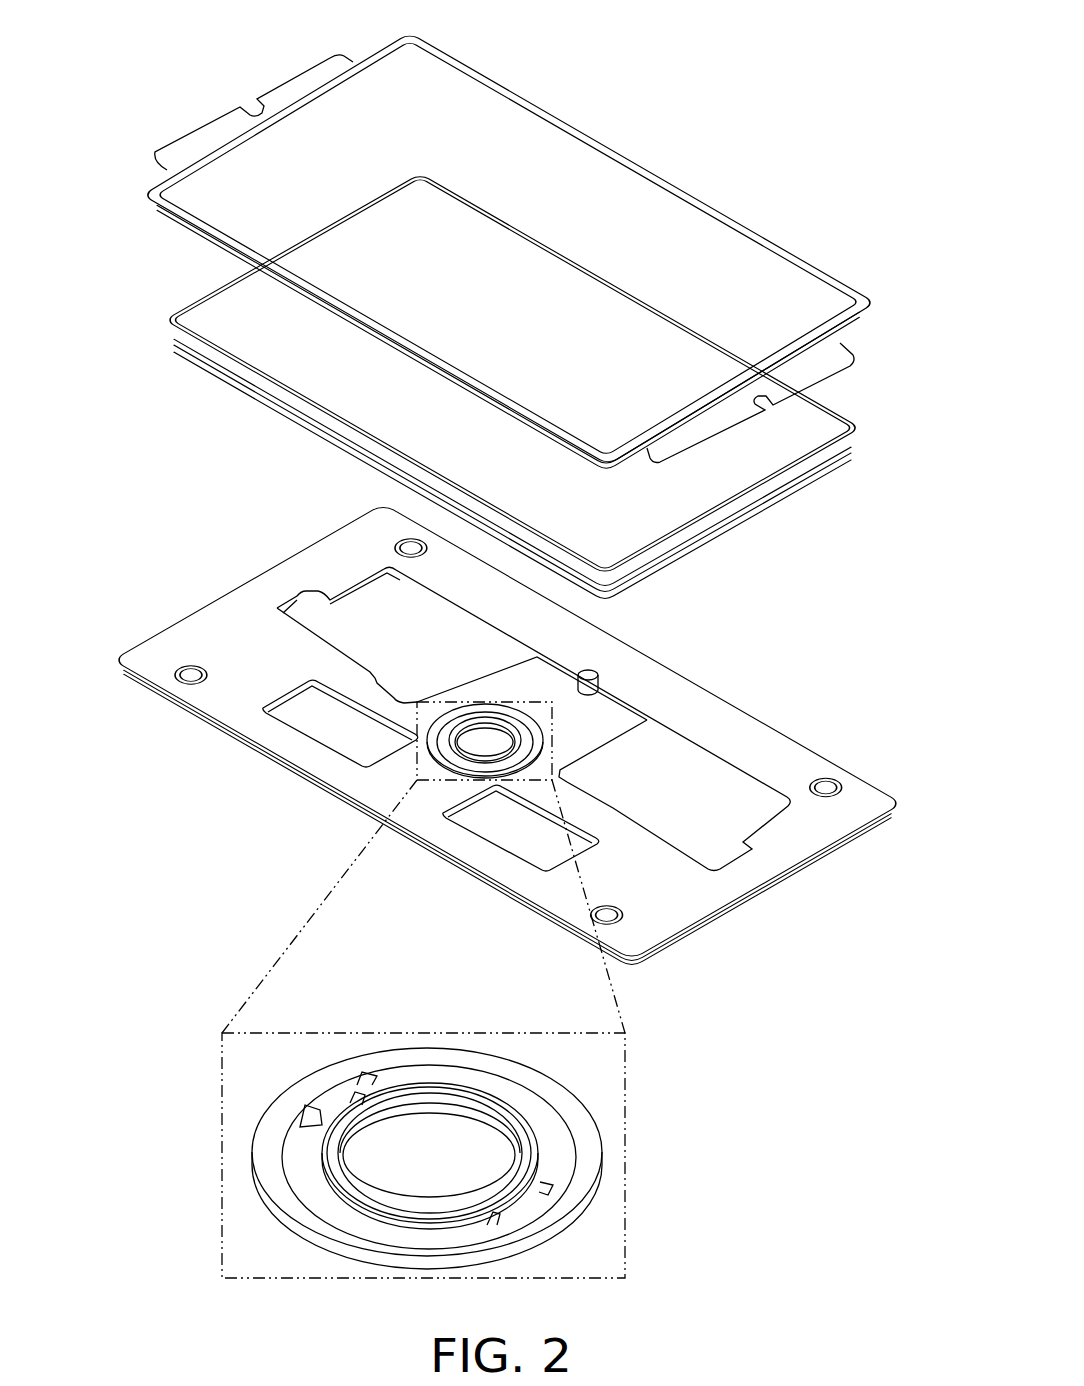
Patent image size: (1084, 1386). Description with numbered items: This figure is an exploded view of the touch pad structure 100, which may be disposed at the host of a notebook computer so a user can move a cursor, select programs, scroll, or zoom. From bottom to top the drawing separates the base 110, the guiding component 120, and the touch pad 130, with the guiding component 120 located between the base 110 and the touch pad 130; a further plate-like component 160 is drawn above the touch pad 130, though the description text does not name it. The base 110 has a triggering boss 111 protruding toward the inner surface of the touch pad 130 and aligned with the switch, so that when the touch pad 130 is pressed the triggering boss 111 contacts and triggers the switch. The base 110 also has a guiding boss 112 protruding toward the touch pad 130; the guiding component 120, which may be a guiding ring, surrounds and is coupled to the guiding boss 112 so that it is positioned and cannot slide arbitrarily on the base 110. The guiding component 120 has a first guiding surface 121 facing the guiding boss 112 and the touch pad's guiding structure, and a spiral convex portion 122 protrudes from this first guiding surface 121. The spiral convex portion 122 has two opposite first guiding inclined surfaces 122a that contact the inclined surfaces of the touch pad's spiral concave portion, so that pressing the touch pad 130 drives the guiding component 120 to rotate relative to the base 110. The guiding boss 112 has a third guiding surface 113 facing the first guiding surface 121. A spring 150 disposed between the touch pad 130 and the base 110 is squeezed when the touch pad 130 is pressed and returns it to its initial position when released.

The touch pad structure 100 is at (905, 1030).
The base 110 is at (736, 725).
The triggering boss 111 is at (597, 675).
The guiding boss 112 is at (487, 1147).
The third guiding surface 113 is at (300, 1192).
The guiding component 120 is at (580, 1178).
The first guiding surface 121 is at (300, 1163).
The spiral convex portion 122 is at (338, 1097).
The first guiding inclined surface 122a is at (307, 1118).
The touch pad 130 is at (257, 355).
The spring 150 is at (520, 1157).
The cover plate 160 is at (480, 70).